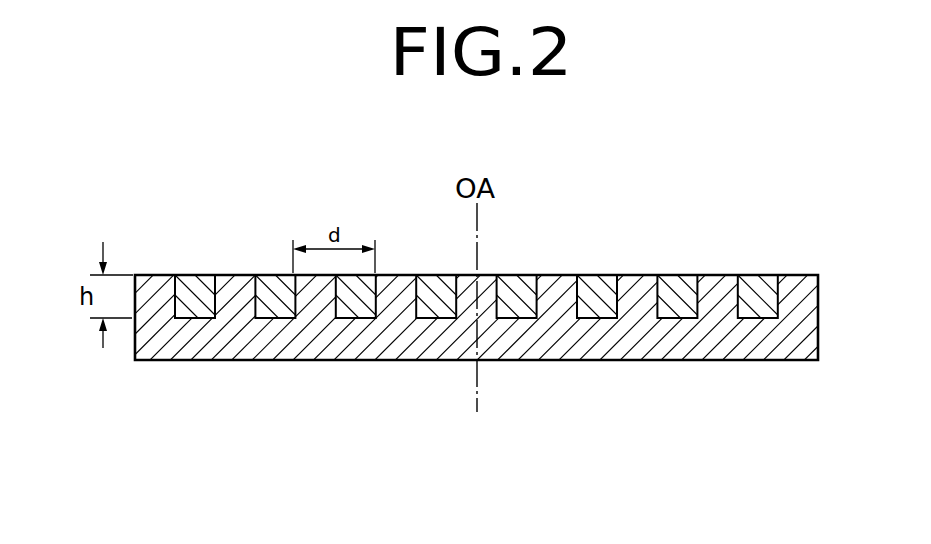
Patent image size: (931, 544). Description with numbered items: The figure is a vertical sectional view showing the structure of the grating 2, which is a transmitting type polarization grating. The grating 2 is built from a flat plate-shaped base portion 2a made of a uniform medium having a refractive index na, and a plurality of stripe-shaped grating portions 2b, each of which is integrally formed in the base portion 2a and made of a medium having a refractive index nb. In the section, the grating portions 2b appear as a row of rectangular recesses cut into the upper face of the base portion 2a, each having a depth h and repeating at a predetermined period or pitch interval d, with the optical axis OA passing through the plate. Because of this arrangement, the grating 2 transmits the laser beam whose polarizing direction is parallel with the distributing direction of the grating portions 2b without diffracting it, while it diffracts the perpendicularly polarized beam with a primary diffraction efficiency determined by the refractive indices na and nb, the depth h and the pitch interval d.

The grating 2 is at (481, 290).
The base portion 2a is at (253, 350).
The grating portions 2b is at (267, 283).